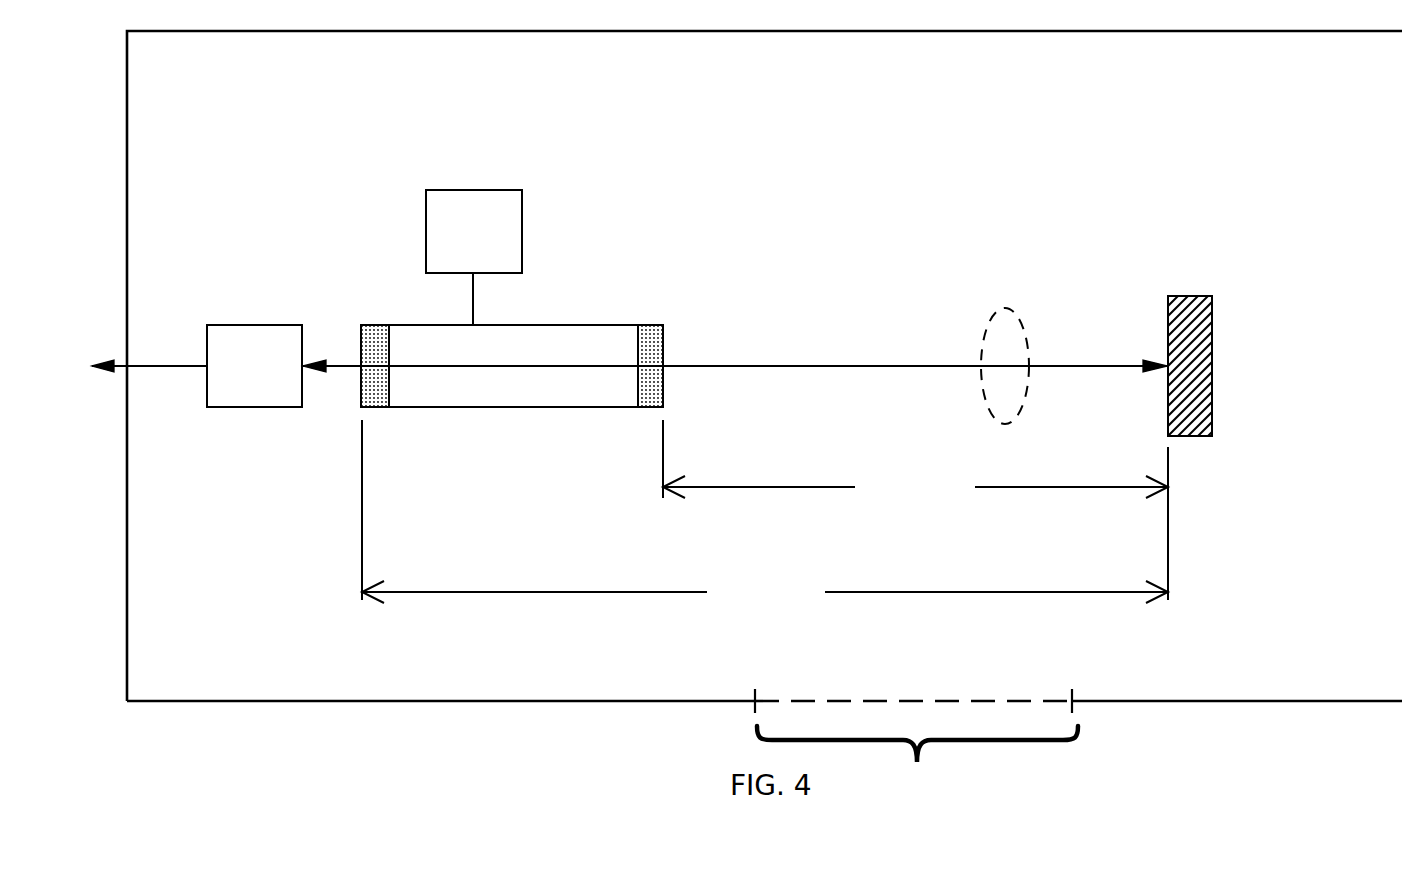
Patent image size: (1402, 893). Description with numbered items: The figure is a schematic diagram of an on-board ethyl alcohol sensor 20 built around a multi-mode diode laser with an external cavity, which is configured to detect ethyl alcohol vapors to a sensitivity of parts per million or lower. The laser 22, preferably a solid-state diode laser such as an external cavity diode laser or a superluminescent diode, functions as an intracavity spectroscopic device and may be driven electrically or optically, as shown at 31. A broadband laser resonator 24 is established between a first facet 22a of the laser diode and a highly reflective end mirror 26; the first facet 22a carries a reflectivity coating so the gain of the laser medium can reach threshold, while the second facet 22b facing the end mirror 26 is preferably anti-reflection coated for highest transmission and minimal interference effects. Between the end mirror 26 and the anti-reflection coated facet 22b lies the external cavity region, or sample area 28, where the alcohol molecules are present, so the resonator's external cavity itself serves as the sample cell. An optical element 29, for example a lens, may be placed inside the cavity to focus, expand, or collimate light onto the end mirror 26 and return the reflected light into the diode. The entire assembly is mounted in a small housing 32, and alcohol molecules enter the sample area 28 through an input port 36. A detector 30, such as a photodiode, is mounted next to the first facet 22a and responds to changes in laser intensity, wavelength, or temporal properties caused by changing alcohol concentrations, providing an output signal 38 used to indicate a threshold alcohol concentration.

The sensor 20 is at (812, 252).
The laser 22 is at (534, 325).
The first facet 22a is at (372, 325).
The second facet 22b is at (645, 325).
The broadband laser resonator 24 is at (765, 514).
The end mirror 26 is at (1167, 318).
The sample area 28 is at (915, 510).
The optical element 29 is at (990, 330).
The detector 30 is at (245, 407).
The laser drive 31 is at (426, 205).
The housing 32 is at (622, 701).
The input port 36 is at (916, 746).
The output signal 38 is at (188, 362).